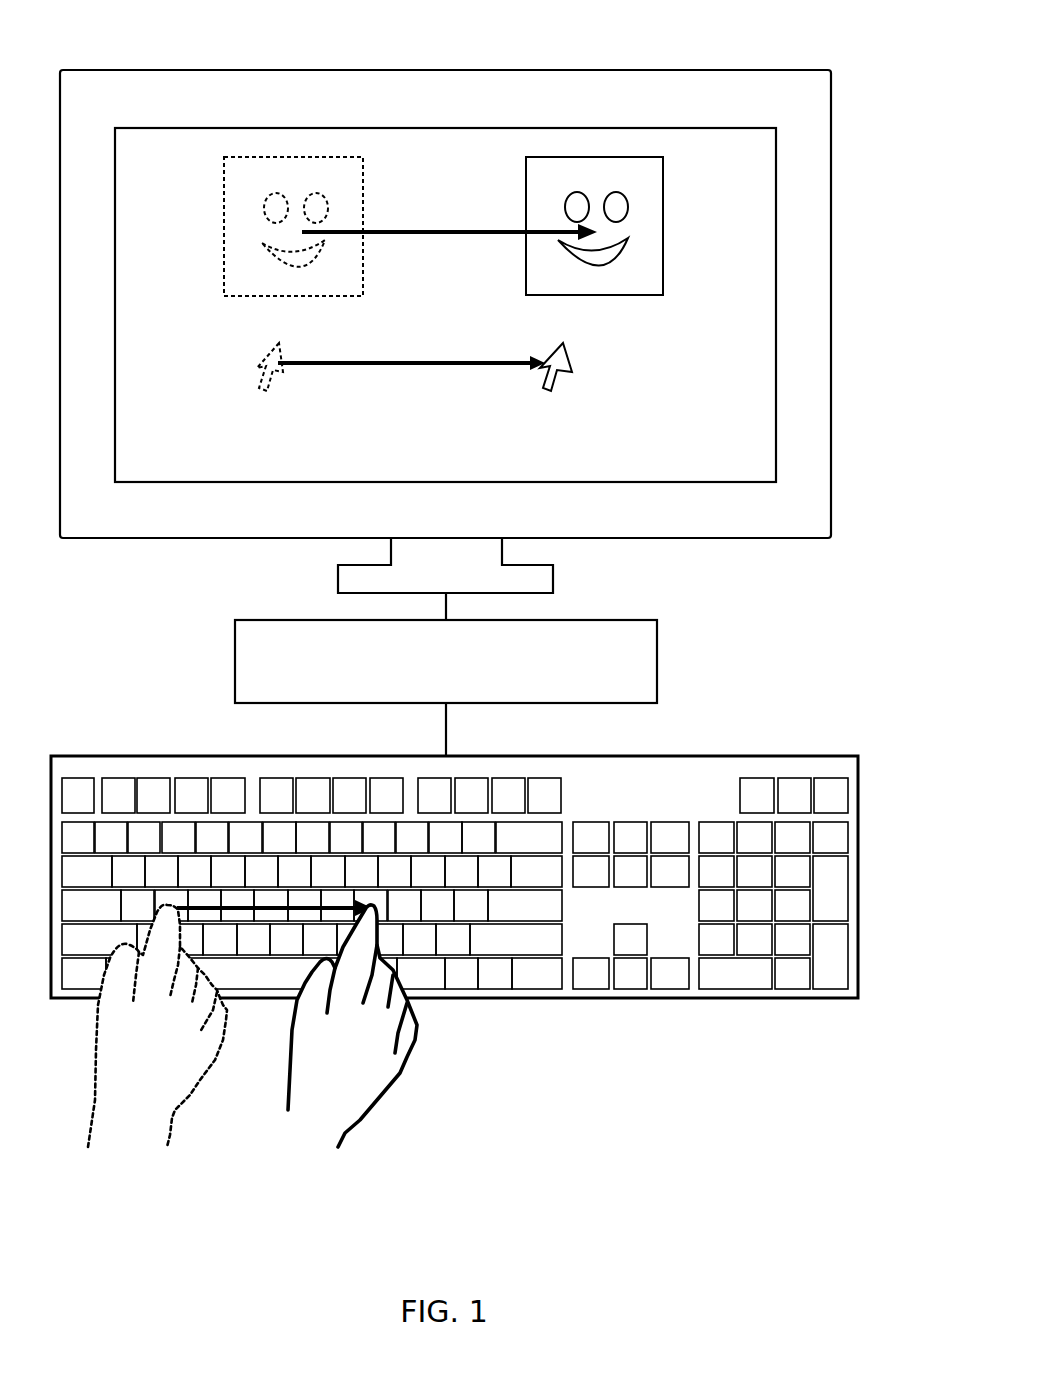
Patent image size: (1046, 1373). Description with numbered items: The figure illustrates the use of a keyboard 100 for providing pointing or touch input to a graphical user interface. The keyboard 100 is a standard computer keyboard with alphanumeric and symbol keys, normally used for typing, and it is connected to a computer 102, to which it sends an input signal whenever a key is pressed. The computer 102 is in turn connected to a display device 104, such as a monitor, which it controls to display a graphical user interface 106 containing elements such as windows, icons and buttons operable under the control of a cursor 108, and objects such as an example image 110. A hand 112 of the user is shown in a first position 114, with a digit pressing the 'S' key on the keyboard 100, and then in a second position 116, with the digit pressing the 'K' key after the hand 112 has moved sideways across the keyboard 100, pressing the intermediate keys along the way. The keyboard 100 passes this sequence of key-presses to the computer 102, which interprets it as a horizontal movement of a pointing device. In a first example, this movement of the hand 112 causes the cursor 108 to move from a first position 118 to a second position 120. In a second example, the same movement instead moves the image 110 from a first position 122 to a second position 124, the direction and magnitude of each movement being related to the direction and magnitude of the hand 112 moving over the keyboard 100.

The keyboard 100 is at (820, 755).
The computer 102 is at (652, 620).
The display device 104 is at (785, 70).
The graphical user interface 106 is at (172, 153).
The cursor 108 is at (431, 411).
The image 110 is at (467, 257).
The hand 112 is at (264, 1067).
The first position 114 is at (122, 1158).
The second position 116 is at (313, 1158).
The first position 118 is at (258, 408).
The second position 120 is at (542, 408).
The first position 122 is at (233, 300).
The second position 124 is at (523, 300).